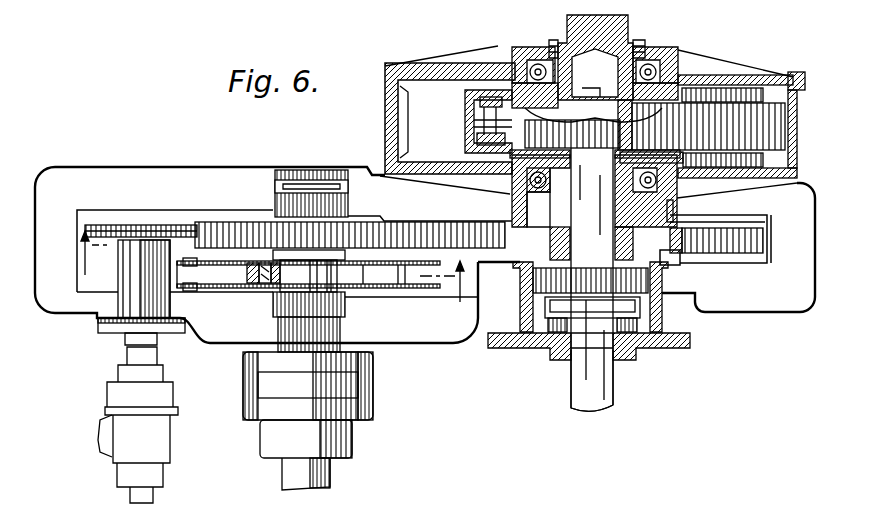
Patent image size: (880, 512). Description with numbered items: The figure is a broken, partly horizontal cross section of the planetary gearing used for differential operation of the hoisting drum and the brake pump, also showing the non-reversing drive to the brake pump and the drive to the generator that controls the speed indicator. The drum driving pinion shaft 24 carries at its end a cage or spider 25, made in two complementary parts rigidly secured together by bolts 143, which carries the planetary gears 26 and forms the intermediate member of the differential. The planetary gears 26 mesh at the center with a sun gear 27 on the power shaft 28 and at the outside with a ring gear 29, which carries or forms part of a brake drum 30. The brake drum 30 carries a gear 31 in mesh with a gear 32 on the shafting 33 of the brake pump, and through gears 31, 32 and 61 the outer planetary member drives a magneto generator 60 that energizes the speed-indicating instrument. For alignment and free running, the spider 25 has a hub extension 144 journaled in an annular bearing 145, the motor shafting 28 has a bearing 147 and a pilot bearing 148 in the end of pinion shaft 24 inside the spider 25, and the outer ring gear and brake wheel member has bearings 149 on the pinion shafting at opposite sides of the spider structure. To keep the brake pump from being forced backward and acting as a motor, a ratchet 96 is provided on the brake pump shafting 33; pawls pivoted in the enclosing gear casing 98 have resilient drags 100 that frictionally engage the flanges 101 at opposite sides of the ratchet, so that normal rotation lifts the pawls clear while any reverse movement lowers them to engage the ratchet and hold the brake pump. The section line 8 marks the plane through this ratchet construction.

The section line 8- 8 is at (272, 266).
The shaft 24 is at (567, 26).
The cage or spider 25 is at (684, 92).
The planetary gears 26 is at (763, 113).
The sun gear 27 is at (593, 259).
The power shaft 28 is at (614, 388).
The ring gear 29 is at (397, 100).
The brake drum 30 is at (397, 130).
The gear 31 is at (742, 250).
The gear 32 is at (243, 222).
The shafting 33 is at (330, 479).
The magneto generator 60 is at (100, 428).
The gear 61 is at (118, 224).
The ratchet 96 is at (409, 266).
The gear casing 98 is at (418, 343).
The drags 100 is at (264, 286).
The flanges 101 is at (191, 286).
The bolts 143 is at (465, 122).
The hub extension 144 is at (673, 210).
The annular bearing 145 is at (650, 287).
The bearing 147 is at (560, 345).
The pilot bearing 148 is at (595, 73).
The bearings 149 is at (523, 62).